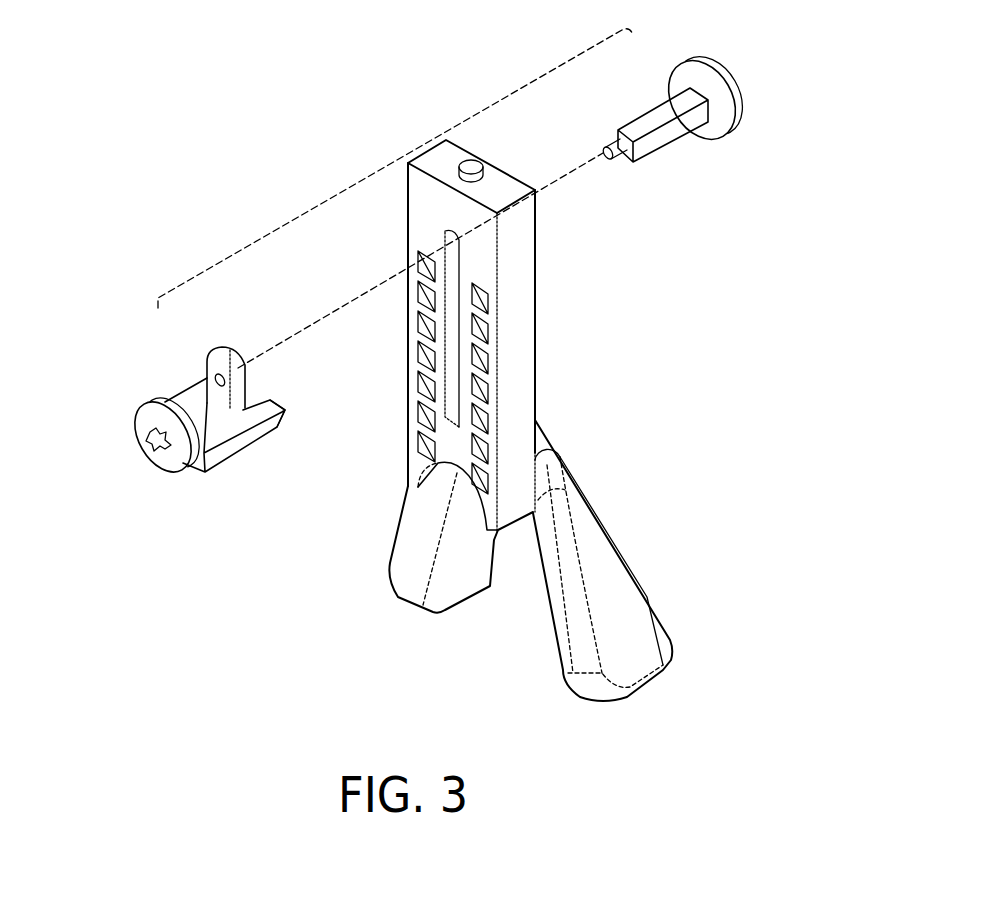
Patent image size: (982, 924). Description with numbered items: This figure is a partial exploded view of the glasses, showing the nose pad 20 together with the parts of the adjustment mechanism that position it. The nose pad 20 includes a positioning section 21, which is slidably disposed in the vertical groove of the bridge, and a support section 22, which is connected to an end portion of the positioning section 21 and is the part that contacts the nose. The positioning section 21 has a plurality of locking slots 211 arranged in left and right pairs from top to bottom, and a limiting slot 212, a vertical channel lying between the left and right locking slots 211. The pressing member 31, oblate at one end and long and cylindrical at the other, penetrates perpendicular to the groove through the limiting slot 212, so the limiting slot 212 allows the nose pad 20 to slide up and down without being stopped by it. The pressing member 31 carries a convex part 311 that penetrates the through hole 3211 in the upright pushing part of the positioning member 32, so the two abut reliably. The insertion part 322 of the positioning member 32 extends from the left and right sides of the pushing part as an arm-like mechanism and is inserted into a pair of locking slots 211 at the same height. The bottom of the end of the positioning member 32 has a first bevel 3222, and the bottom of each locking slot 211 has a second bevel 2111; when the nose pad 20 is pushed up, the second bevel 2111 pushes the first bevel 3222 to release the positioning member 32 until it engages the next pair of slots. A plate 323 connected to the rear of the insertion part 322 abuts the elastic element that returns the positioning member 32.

The nose pad 20 is at (672, 240).
The positioning section 21 is at (500, 258).
The locking slots 211 is at (500, 443).
The second bevel 2111 is at (418, 415).
The limiting slot 212 is at (431, 335).
The support section 22 is at (592, 540).
The pressing member 31 is at (641, 118).
The convex part 311 is at (615, 140).
The positioning member 32 is at (185, 403).
The through hole 3211 is at (246, 381).
The insertion part 322 is at (225, 456).
The first bevel 3222 is at (284, 435).
The plate 323 is at (140, 428).